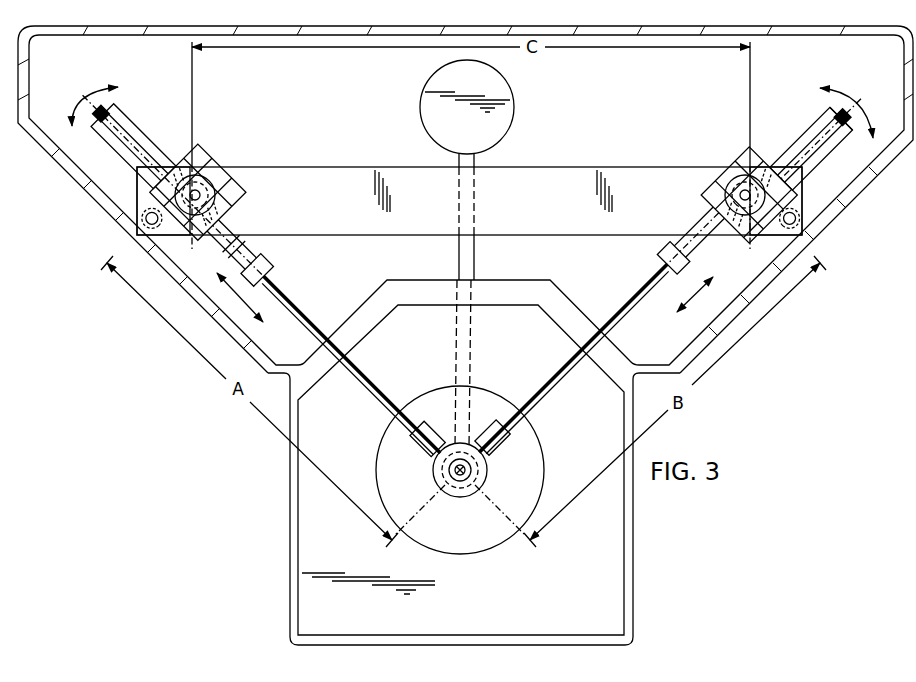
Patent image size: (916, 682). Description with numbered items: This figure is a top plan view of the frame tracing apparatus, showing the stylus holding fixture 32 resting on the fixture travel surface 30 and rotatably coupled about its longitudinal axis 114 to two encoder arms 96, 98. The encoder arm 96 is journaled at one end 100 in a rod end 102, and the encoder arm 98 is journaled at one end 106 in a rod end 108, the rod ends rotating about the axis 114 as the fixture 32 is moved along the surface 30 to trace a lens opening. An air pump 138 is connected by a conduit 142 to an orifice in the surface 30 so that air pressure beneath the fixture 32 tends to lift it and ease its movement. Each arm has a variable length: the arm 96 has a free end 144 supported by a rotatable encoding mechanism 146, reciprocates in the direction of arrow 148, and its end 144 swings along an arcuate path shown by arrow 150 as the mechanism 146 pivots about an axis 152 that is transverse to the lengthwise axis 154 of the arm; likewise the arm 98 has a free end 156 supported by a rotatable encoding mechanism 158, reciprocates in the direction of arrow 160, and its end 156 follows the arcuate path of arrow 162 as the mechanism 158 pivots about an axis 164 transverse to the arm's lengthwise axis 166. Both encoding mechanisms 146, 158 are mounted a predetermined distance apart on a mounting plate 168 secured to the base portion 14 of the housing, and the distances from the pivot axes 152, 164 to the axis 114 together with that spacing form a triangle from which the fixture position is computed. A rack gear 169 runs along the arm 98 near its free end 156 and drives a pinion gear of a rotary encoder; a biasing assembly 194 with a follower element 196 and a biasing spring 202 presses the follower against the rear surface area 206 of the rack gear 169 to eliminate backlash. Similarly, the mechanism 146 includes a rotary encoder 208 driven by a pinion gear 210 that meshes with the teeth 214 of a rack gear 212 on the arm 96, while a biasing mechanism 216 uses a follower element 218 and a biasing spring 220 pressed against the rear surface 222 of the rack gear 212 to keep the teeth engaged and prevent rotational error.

The base portion 14 is at (724, 291).
The fixture travel surface 30 is at (573, 550).
The stylus holding fixture 32 is at (538, 438).
The encoder arm 96 is at (306, 300).
The encoder arm 98 is at (628, 302).
The end of encoder arm 100 is at (392, 390).
The rod end 102 is at (420, 443).
The end of encoder arm 106 is at (528, 390).
The rod end 108 is at (497, 446).
The longitudinal axis 114 is at (460, 478).
The air pump 138 is at (511, 89).
The conduit 142 is at (476, 246).
The free end of encoder arm 144 is at (122, 140).
The rotatable encoding mechanism 146 is at (249, 205).
The arrow 148 is at (236, 288).
The arrow 150 is at (80, 106).
The pivot axis 152 is at (143, 187).
The axis 154 is at (100, 110).
The free end of encoder arm 156 is at (830, 140).
The rotatable encoding mechanism 158 is at (686, 205).
The arrow 160 is at (696, 295).
The arrow 162 is at (846, 103).
The pivot axis 164 is at (782, 197).
The axis 166 is at (852, 118).
The mounting plate 168 is at (558, 168).
The rack gear 169 is at (800, 140).
The biasing assembly 194 is at (735, 163).
The follower element 196 is at (716, 180).
The biasing spring 202 is at (698, 202).
The rear surface area 206 is at (768, 160).
The rotary encoder 208 is at (199, 232).
The pinion gear 210 is at (180, 224).
The rack gear 212 is at (270, 256).
The teeth 214 is at (238, 219).
The biasing mechanism 216 is at (215, 160).
The follower element 218 is at (221, 170).
The biasing spring 220 is at (241, 183).
The rear surface 222 is at (272, 238).